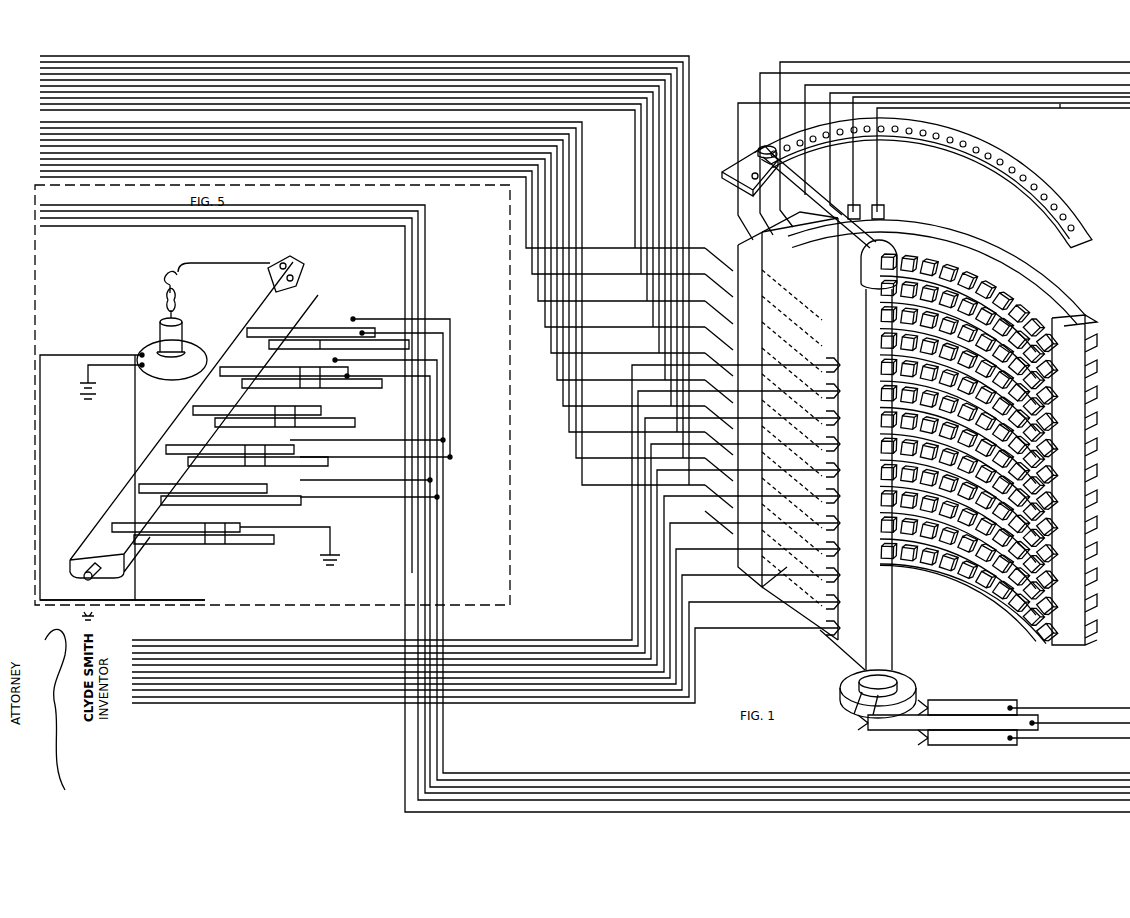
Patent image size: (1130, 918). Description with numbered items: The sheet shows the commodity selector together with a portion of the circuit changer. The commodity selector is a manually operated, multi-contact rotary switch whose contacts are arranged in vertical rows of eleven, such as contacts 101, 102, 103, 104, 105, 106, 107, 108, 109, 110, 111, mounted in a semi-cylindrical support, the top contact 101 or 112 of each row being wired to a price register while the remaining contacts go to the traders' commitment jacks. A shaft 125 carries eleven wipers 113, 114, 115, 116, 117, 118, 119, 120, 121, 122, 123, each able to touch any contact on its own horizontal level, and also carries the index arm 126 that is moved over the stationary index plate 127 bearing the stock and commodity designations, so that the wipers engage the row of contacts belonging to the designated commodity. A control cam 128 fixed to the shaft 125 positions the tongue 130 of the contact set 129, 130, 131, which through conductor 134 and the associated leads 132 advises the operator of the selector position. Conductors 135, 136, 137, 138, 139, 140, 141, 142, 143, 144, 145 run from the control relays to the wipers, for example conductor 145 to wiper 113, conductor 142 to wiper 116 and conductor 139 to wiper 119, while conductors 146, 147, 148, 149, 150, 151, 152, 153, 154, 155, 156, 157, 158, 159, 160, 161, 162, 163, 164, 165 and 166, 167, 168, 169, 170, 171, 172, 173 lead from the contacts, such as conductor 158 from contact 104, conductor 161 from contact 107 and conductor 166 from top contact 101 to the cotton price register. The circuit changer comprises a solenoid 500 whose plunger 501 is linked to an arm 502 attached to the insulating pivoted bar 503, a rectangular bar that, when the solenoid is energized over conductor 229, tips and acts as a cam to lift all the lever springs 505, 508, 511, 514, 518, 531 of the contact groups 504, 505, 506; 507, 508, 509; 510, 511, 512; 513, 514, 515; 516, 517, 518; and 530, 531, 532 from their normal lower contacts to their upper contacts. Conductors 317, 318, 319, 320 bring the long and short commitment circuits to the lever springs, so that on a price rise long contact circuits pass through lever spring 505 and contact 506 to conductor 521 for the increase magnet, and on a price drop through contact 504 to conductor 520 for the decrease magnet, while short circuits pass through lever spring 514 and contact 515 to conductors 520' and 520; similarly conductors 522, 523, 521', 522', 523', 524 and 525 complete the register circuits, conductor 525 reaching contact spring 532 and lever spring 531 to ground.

In FIG. 1, the contact 101 is at (719, 250).
In FIG. 1, the contact 102 is at (719, 276).
In FIG. 1, the contact 103 is at (719, 303).
In FIG. 1, the contact 104 is at (719, 329).
In FIG. 1, the contact 105 is at (719, 355).
In FIG. 1, the contact 106 is at (719, 382).
In FIG. 1, the contact 107 is at (719, 408).
In FIG. 1, the contact 108 is at (719, 434).
In FIG. 1, the contact 109 is at (719, 460).
In FIG. 1, the contact 110 is at (719, 487).
In FIG. 1, the contact 111 is at (719, 513).
In FIG. 1, the top contact 112 is at (779, 228).
In FIG. 1, the wiper 113 is at (836, 345).
In FIG. 1, the contact 114 is at (836, 371).
In FIG. 1, the wiper 115 is at (836, 398).
In FIG. 1, the wiper 116 is at (836, 424).
In FIG. 1, the wiper 117 is at (836, 450).
In FIG. 1, the wiper 118 is at (836, 477).
In FIG. 1, the wiper 119 is at (836, 503).
In FIG. 1, the wiper 120 is at (836, 529).
In FIG. 1, the wiper 121 is at (836, 556).
In FIG. 1, the wiper 122 is at (836, 582).
In FIG. 1, the wiper 123 is at (836, 608).
In FIG. 1, the shaft 125 is at (891, 610).
In FIG. 1, the index arm 126 is at (853, 202).
In FIG. 1, the index plate 127 is at (1058, 198).
In FIG. 1, the control cam 128 is at (908, 676).
In FIG. 1, the contact 129 is at (958, 696).
In FIG. 1, the tongue 130 is at (900, 732).
In FIG. 1, the contact 131 is at (985, 742).
In FIG. 1, the wire 132 is at (1094, 706).
In FIG. 1, the conductor 134 is at (1098, 738).
In FIG. 1, the wire 135 is at (694, 642).
In FIG. 1, the wire 136 is at (690, 654).
In FIG. 1, the wire 137 is at (684, 666).
In FIG. 1, the wire 138 is at (680, 678).
In FIG. 1, the conductor 139 is at (478, 665).
In FIG. 1, the wire 140 is at (512, 672).
In FIG. 1, the wire 141 is at (547, 678).
In FIG. 1, the conductor 142 is at (488, 640).
In FIG. 1, the conductor 143 is at (520, 646).
In FIG. 1, the wire 144 is at (551, 653).
In FIG. 1, the conductor 145 is at (586, 659).
In FIG. 1, the wire 146 is at (595, 248).
In FIG. 1, the conductor 147 is at (595, 274).
In FIG. 1, the wire 148 is at (595, 301).
In FIG. 1, the wire 149 is at (595, 327).
In FIG. 1, the wire 150 is at (592, 353).
In FIG. 1, the wire 151 is at (592, 380).
In FIG. 1, the wire 152 is at (592, 406).
In FIG. 1, the wire 153 is at (592, 432).
In FIG. 1, the wire 154 is at (592, 458).
In FIG. 1, the wire 155 is at (592, 485).
In FIG. 1, the wire 156 is at (632, 233).
In FIG. 1, the wire 157 is at (644, 262).
In FIG. 1, the conductor 158 is at (647, 289).
In FIG. 1, the wire 159 is at (654, 313).
In FIG. 1, the wire 160 is at (662, 341).
In FIG. 1, the conductor 161 is at (674, 380).
In FIG. 1, the wire 162 is at (677, 406).
In FIG. 1, the wire 163 is at (680, 432).
In FIG. 1, the wire 164 is at (688, 458).
In FIG. 1, the wire 165 is at (693, 482).
In FIG. 1, the conductor 166 is at (754, 62).
In FIG. 1, the wire 167 is at (749, 100).
In FIG. 1, the wire 168 is at (755, 82).
In FIG. 1, the wire 169 is at (807, 85).
In FIG. 1, the wire 170 is at (809, 93).
In FIG. 1, the wire 171 is at (971, 100).
In FIG. 1, the wire 172 is at (1006, 102).
In FIG. 1, the wire 173 is at (1044, 106).
In FIG. 5, the conductor 229 is at (204, 600).
In FIG. 5, the wire 317 is at (432, 222).
In FIG. 5, the conductor 318 is at (432, 234).
In FIG. 5, the conductor 319 is at (432, 246).
In FIG. 5, the conductor 320 is at (432, 258).
In FIG. 5, the solenoid 500 is at (135, 426).
In FIG. 5, the plunger 501 is at (153, 336).
In FIG. 5, the arm 502 is at (214, 263).
In FIG. 5, the insulating pivoted bar 503 is at (309, 289).
In FIG. 5, the contact spring 504 is at (332, 320).
In FIG. 5, the lever spring 505 is at (361, 326).
In FIG. 5, the contact spring 506 is at (343, 348).
In FIG. 5, the contact spring 507 is at (268, 378).
In FIG. 5, the lever spring 508 is at (304, 379).
In FIG. 5, the contact spring 509 is at (337, 387).
In FIG. 5, the contact strip 510 is at (251, 416).
In FIG. 5, the contact strip 511 is at (283, 418).
In FIG. 5, the contact 512 is at (301, 418).
In FIG. 5, the contact strip 513 is at (224, 457).
In FIG. 5, the lever spring 514 is at (254, 459).
In FIG. 5, the contact spring 515 is at (283, 469).
In FIG. 5, the contact strip 516 is at (238, 498).
In FIG. 5, the board 517 is at (130, 501).
In FIG. 5, the contact strip 518 is at (272, 500).
In FIG. 5, the conductor 520 is at (420, 387).
In FIG. 5, the conductor 521 is at (745, 552).
In FIG. 5, the wire 522 is at (731, 568).
In FIG. 5, the conductor 523 is at (737, 579).
In FIG. 5, the conductor 520' is at (376, 465).
In FIG. 5, the wire 521' is at (367, 434).
In FIG. 5, the wire 522' is at (369, 504).
In FIG. 5, the wire 523' is at (365, 475).
In FIG. 5, the wire 524 is at (404, 561).
In FIG. 5, the conductor 525 is at (404, 574).
In FIG. 5, the contact spring 530 is at (176, 537).
In FIG. 5, the lever spring 531 is at (206, 537).
In FIG. 5, the contact spring 532 is at (236, 542).